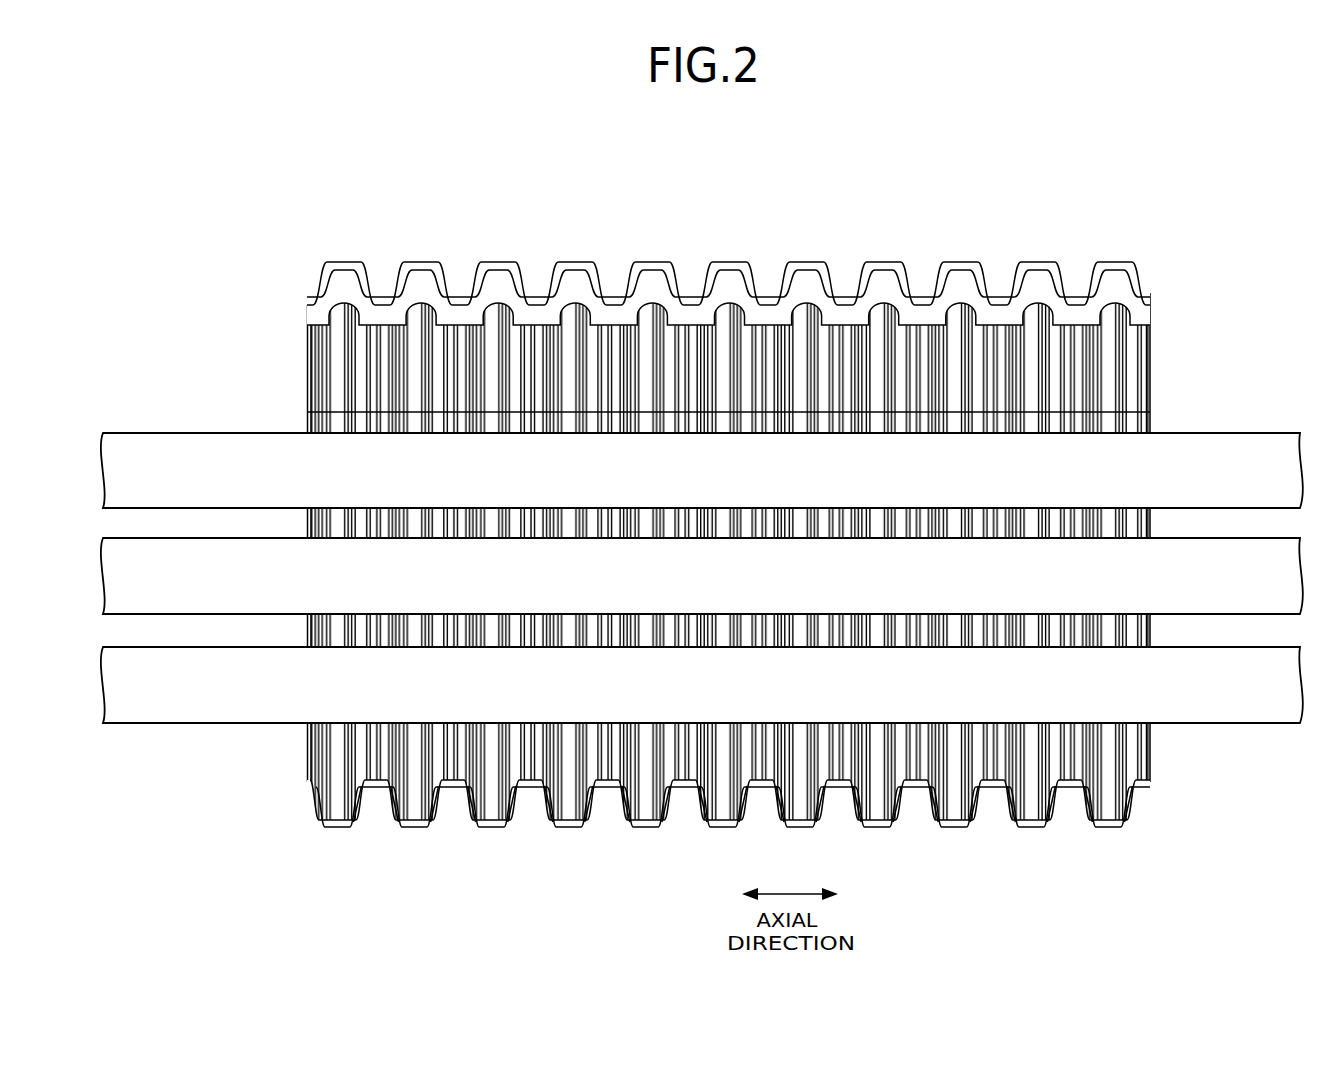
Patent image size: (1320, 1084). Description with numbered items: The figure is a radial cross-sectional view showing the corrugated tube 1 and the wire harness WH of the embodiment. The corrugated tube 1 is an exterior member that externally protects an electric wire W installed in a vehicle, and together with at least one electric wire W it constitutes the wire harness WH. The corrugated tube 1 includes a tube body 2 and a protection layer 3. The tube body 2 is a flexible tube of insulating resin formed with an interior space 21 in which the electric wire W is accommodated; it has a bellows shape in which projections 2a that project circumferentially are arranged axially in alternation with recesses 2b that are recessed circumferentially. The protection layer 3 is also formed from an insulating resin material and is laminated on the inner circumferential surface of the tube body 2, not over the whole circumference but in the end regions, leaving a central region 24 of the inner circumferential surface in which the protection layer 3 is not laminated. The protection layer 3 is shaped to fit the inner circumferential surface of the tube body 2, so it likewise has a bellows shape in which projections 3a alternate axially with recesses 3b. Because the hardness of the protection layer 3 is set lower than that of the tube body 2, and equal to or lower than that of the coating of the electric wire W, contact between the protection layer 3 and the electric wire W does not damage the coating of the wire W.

The corrugated tube 1 is at (537, 132).
The wire harness WH is at (848, 162).
The electric wire W is at (1265, 653).
The tube body 2 is at (304, 280).
The projection 2a is at (343, 261).
The recess 2b is at (384, 296).
The protection layer 3 is at (297, 308).
The projection 3a is at (377, 328).
The recess 3b is at (420, 312).
The interior space 21 is at (1108, 386).
The central region 24 is at (413, 803).